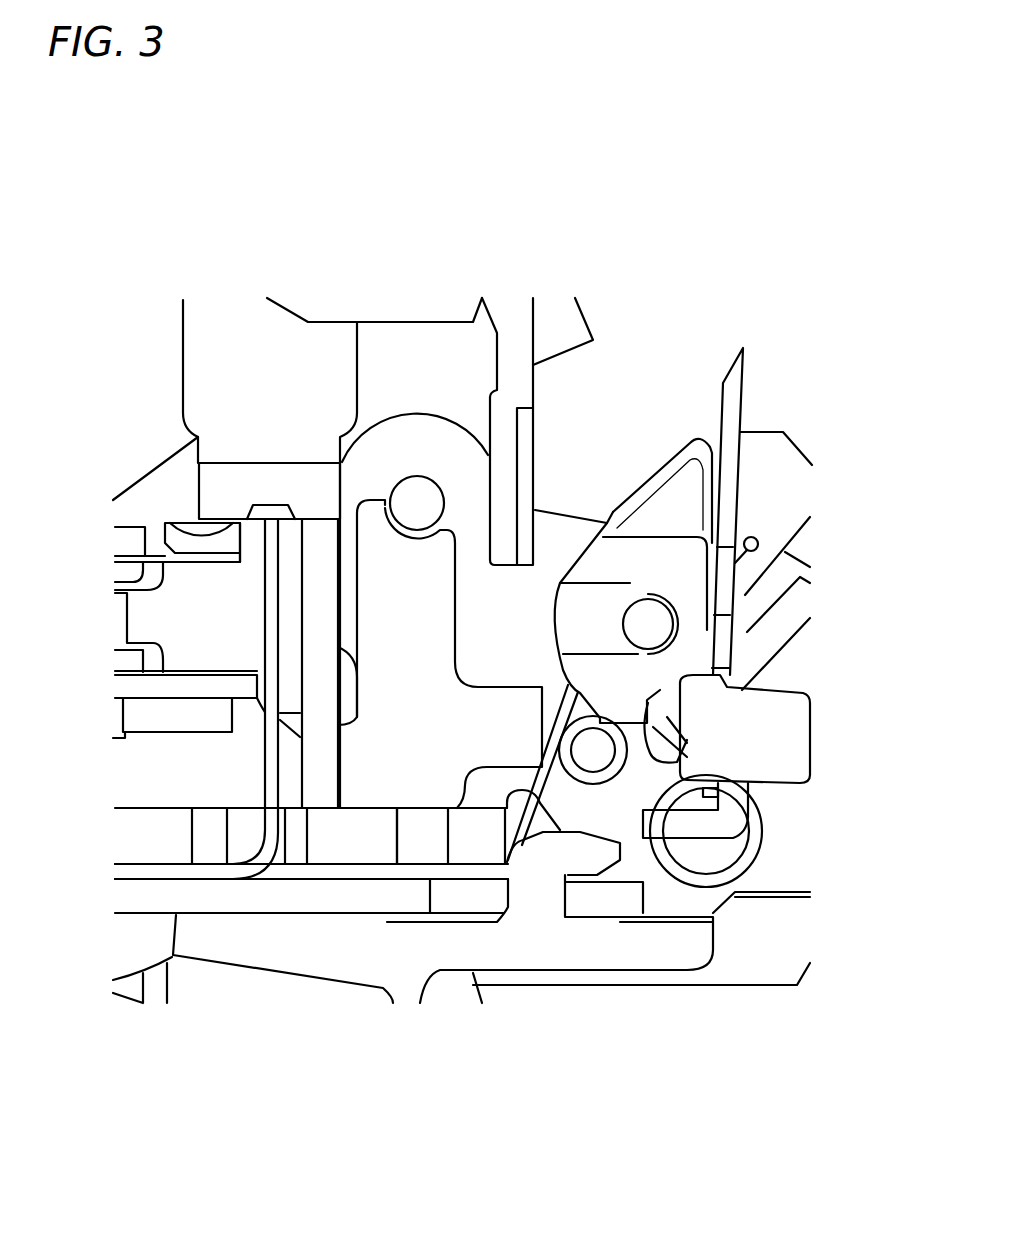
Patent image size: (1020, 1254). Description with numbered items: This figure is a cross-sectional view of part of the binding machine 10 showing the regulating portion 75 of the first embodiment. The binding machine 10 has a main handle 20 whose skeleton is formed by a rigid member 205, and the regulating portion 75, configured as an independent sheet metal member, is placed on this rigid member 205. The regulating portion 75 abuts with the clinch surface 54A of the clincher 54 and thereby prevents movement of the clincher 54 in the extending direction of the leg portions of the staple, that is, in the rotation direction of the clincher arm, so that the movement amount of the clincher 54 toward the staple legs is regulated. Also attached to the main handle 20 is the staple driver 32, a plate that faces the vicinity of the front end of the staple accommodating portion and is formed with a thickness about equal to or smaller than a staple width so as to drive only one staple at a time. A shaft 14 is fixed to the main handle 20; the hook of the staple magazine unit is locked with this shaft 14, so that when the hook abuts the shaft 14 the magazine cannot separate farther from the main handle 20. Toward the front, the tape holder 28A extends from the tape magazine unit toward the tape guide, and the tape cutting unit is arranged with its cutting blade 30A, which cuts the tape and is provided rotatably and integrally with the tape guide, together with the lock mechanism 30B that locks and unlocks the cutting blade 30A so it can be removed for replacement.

The binding machine 10 is at (492, 1147).
The shaft 14 is at (420, 497).
The main handle 20 is at (118, 946).
The tape holder 28A is at (297, 990).
The cutting blade 30A is at (723, 383).
The lock mechanism 30B is at (810, 737).
The staple driver 32 is at (272, 765).
The clincher 54 is at (210, 487).
The clinch surface 54A is at (145, 483).
The regulating portion 75 is at (402, 787).
The rigid member 205 is at (148, 838).